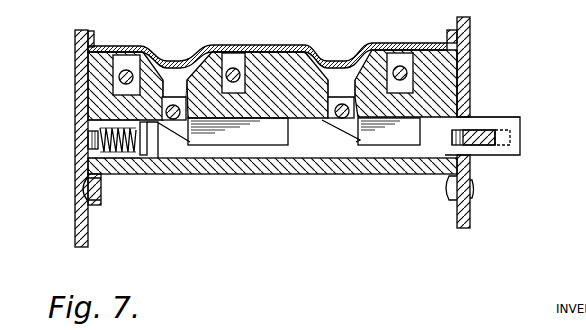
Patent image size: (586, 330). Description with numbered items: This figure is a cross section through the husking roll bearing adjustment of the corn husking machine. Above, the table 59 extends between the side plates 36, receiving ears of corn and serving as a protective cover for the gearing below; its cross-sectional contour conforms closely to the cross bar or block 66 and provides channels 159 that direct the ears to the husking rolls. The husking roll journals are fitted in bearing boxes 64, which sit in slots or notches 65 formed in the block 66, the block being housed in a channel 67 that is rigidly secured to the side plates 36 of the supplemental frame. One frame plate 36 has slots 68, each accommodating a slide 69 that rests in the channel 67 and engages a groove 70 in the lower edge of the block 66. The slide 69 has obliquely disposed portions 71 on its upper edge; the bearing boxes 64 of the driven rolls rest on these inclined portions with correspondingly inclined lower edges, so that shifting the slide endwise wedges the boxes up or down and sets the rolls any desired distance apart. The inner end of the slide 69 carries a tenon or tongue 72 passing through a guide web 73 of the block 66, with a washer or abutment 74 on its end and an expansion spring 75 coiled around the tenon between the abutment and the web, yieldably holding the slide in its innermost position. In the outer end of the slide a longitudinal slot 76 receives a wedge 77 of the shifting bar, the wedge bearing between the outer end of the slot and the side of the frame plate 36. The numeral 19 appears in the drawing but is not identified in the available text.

The housing 19 is at (487, 6).
The side plates 36 is at (77, 234).
The table 59 is at (277, 47).
The channels 159 is at (168, 58).
The bearing boxes 64 is at (232, 53).
The slots or notches 65 is at (175, 80).
The cross bars or blocks 66 is at (435, 84).
The channels 67 is at (434, 178).
The slots 68 is at (463, 126).
The slide 69 is at (512, 136).
The groove 70 is at (393, 133).
The obliquely disposed portions 71 is at (165, 123).
The tenon or tongue 72 is at (143, 158).
The guide web 73 is at (88, 112).
The washer or abutment 74 is at (78, 150).
The expansion spring 75 is at (78, 172).
The longitudinal slot 76 is at (463, 147).
The wedge 77 is at (497, 128).